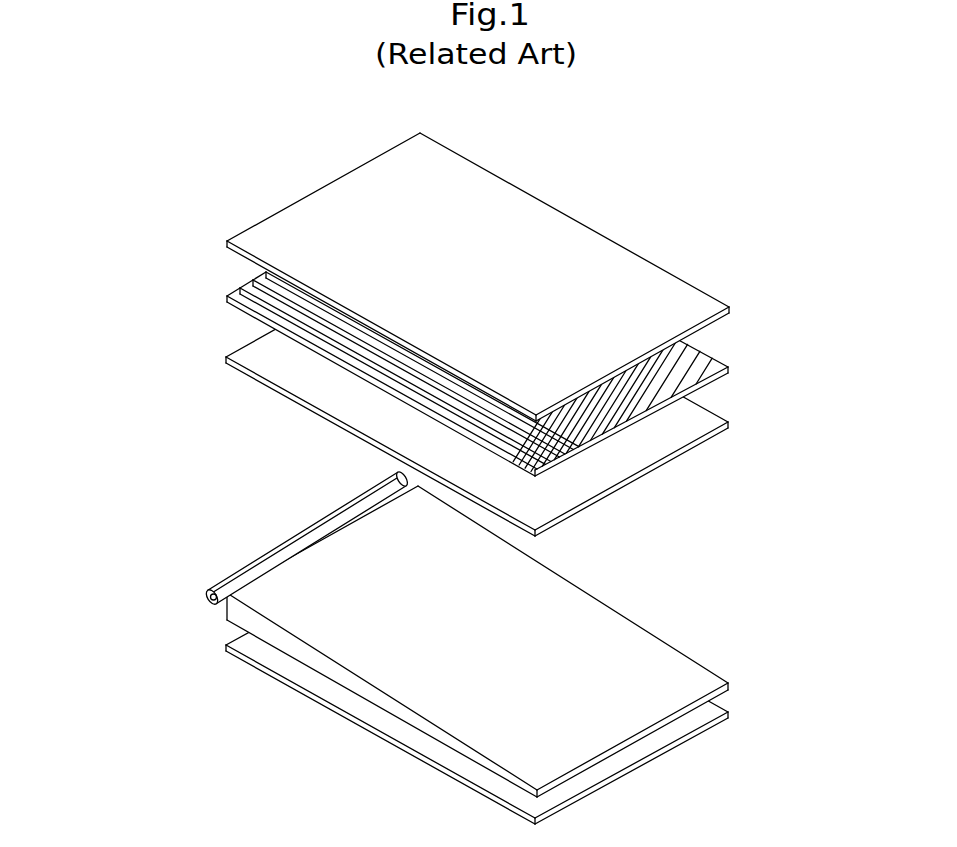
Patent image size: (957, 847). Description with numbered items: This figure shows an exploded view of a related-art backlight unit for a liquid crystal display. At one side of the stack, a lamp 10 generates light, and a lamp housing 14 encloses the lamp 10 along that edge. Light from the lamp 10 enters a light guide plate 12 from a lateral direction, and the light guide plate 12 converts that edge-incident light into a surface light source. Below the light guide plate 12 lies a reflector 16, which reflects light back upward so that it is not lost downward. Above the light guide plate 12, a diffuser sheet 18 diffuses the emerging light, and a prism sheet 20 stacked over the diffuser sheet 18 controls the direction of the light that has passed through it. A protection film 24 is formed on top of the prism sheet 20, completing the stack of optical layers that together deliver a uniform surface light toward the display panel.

The lamp 10 is at (462, 478).
The light guide plate 12 is at (609, 627).
The lamp housing 14 is at (216, 583).
The reflector 16 is at (421, 743).
The diffuser sheet 18 is at (713, 422).
The prism sheet 20 is at (730, 368).
The protection film 24 is at (582, 241).